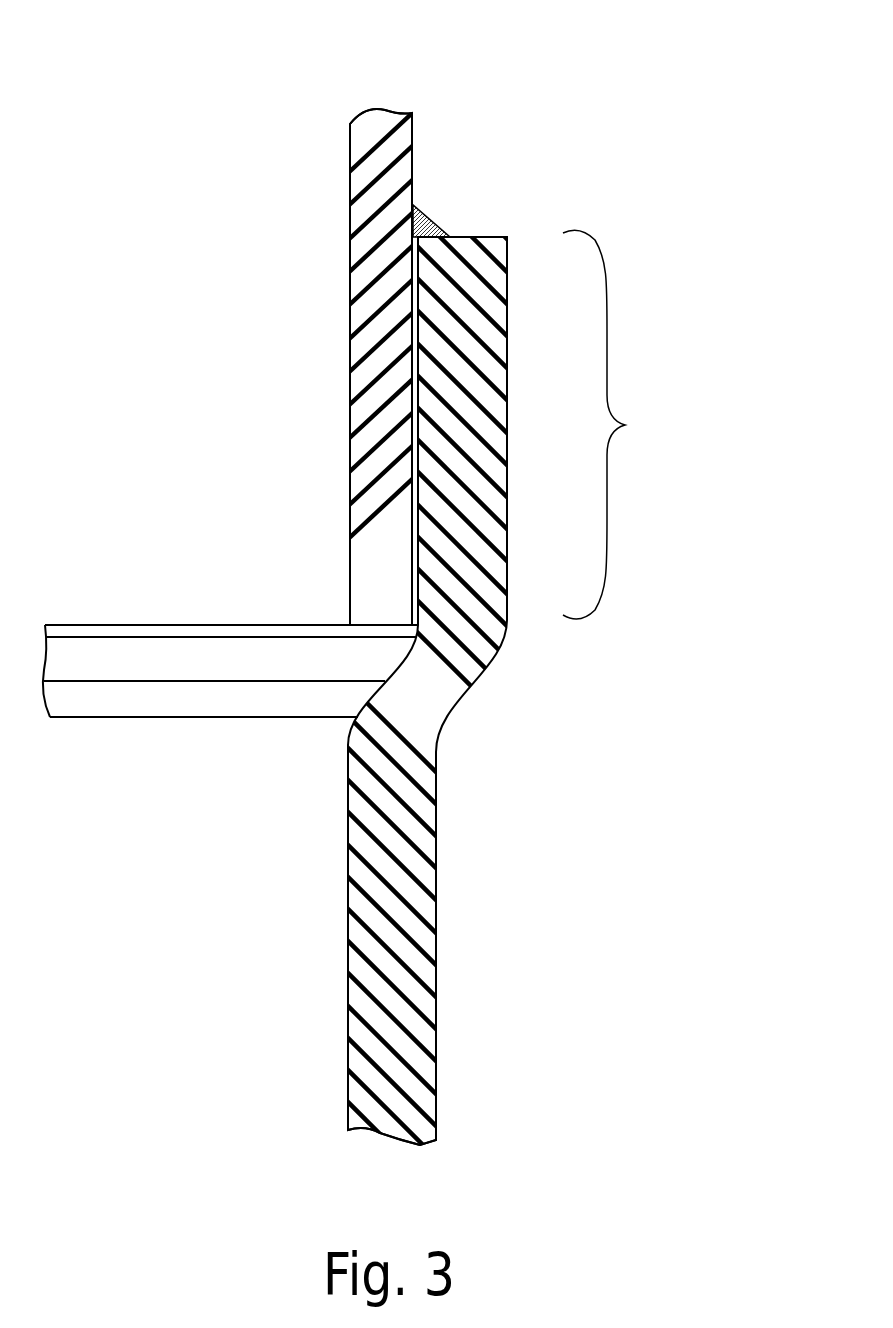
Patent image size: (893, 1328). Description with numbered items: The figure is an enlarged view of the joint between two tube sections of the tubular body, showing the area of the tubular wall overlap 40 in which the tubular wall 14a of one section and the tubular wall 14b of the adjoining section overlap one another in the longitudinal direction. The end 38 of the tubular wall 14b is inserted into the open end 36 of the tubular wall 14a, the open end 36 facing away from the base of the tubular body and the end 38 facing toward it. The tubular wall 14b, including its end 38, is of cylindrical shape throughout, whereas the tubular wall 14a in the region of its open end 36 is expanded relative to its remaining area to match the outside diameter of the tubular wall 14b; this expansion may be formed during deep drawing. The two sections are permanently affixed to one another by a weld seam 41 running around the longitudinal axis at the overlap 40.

The tubular wall portion 14a is at (417, 942).
The tubular wall portion 14b is at (350, 125).
The open end 36 is at (495, 472).
The end 38 is at (360, 392).
The tubular wall overlap 40 is at (633, 428).
The weld seam 41 is at (430, 220).